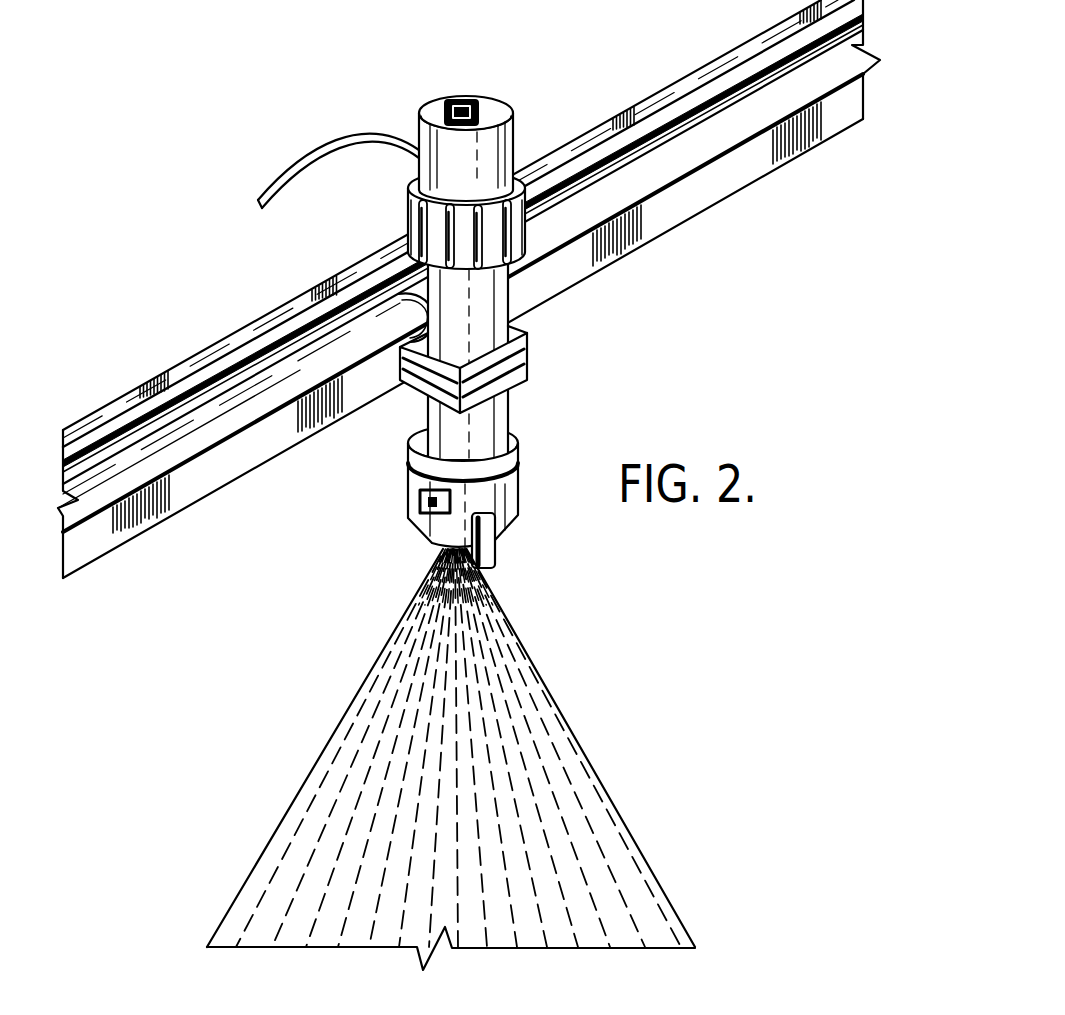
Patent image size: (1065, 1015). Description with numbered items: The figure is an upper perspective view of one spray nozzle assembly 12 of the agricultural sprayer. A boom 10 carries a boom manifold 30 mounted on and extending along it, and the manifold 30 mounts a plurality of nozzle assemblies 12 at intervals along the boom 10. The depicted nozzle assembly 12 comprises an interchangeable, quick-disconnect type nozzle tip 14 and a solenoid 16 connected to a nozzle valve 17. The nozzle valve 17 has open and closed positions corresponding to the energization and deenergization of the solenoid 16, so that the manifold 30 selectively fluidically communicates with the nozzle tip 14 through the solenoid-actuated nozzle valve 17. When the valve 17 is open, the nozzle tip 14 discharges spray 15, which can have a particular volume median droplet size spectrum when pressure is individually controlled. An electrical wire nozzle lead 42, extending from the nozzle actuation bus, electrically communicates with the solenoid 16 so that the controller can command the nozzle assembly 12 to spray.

The boom 10 is at (760, 181).
The boom manifold 30 is at (866, 33).
The spray nozzle assembly 12 is at (552, 380).
The nozzle tip 14 is at (518, 497).
The spray 15 is at (666, 888).
The solenoid 16 is at (478, 96).
The nozzle valve 17 is at (508, 408).
The nozzle lead 42 is at (294, 163).